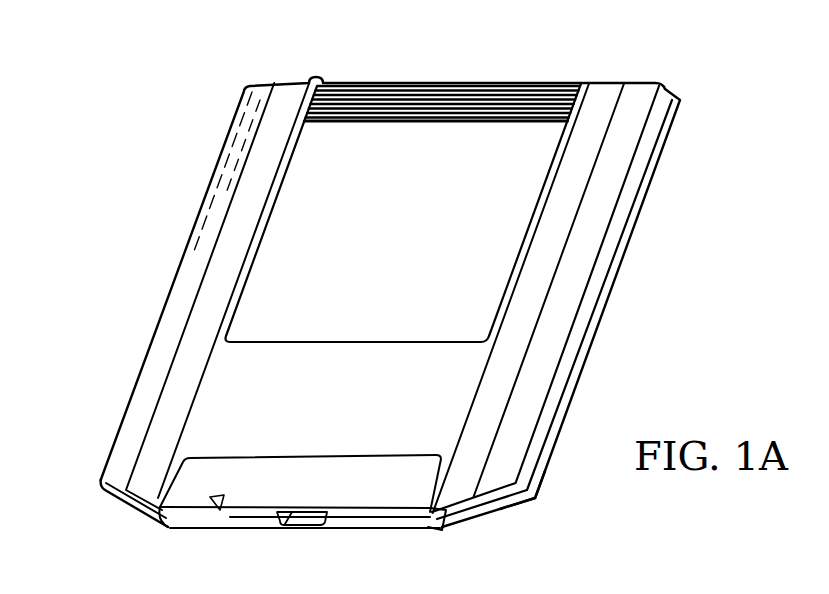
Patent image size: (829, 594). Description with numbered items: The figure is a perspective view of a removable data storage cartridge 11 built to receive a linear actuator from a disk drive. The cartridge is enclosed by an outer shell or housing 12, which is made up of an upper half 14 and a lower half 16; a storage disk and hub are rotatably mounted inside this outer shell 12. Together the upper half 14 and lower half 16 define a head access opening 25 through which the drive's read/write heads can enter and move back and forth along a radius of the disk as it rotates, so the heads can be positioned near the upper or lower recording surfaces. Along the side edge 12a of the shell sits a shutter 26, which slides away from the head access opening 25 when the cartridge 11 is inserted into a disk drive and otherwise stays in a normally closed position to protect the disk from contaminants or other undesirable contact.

The data storage cartridge 11 is at (169, 273).
The outer shell 12 is at (473, 79).
The side edge 12a is at (140, 512).
The upper half 14 is at (525, 412).
The lower half 16 is at (533, 500).
The head access opening 25 is at (303, 523).
The shutter 26 is at (390, 530).